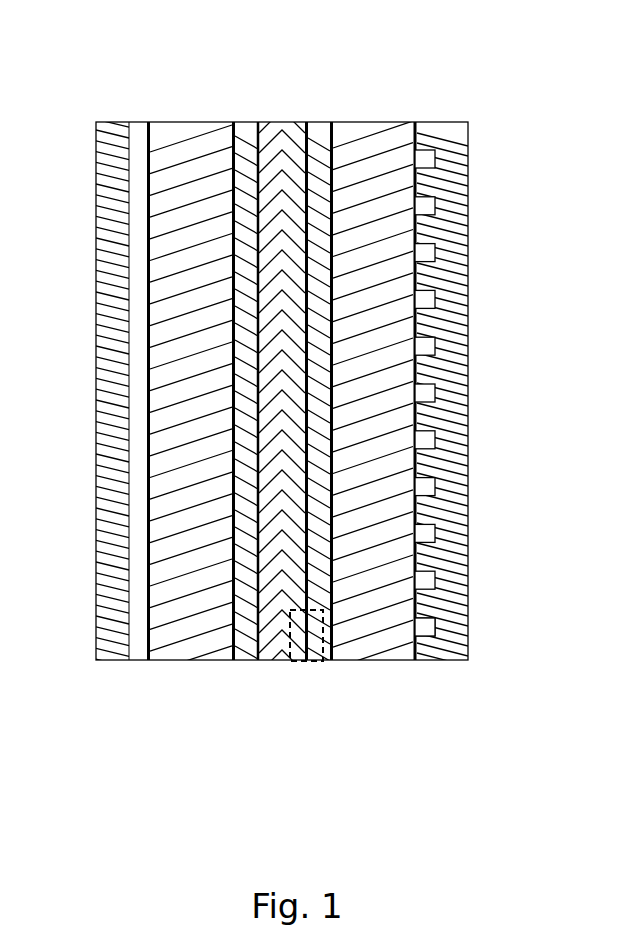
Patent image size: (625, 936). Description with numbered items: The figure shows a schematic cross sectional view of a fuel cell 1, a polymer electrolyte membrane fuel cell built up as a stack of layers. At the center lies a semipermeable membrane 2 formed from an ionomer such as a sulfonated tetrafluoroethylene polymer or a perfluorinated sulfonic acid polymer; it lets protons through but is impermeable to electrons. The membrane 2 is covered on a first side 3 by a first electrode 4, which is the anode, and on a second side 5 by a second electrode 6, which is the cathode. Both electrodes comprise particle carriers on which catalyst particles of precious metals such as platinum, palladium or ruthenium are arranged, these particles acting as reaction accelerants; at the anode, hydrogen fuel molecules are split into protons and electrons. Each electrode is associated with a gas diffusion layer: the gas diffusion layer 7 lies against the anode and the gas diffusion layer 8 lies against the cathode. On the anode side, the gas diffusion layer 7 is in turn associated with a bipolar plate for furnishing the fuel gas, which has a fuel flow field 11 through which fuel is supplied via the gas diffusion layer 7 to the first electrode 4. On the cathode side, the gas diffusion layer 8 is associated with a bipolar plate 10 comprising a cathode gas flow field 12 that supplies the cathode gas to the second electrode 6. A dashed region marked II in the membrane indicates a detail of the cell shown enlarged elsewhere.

The fuel cell 1 is at (498, 105).
The semipermeable membrane 2 is at (278, 625).
The first side 3 is at (248, 160).
The first electrode 4 is at (247, 638).
The second side 5 is at (335, 134).
The second electrode 6 is at (317, 148).
The gas diffusion layer 7 is at (197, 612).
The gas diffusion layer 8 is at (388, 626).
The bipolar plate 10 is at (448, 505).
The fuel flow field 11 is at (139, 648).
The cathode gas flow field 12 is at (429, 640).
The detail section II is at (320, 661).